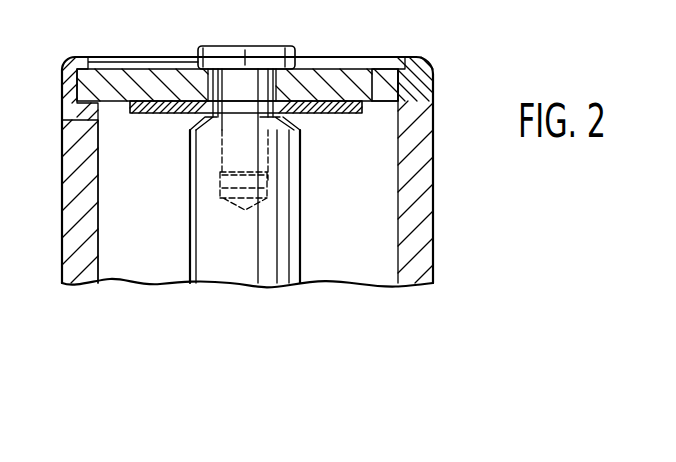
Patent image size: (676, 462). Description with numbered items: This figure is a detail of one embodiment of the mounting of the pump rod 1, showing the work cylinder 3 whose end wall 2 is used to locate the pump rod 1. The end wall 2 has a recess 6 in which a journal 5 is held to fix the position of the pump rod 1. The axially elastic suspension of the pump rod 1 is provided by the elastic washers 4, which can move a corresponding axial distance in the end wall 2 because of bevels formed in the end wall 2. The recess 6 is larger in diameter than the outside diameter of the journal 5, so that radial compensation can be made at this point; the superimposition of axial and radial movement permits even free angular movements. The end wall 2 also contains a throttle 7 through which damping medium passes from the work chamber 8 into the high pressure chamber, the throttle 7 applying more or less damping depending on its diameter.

The pump rod 1 is at (206, 241).
The end wall 2 is at (120, 85).
The work cylinder 3 is at (420, 238).
The elastic washers 4 is at (336, 116).
The journal 5 is at (270, 56).
The recess 6 is at (224, 46).
The throttle 7 is at (384, 83).
The work chamber 8 is at (118, 201).